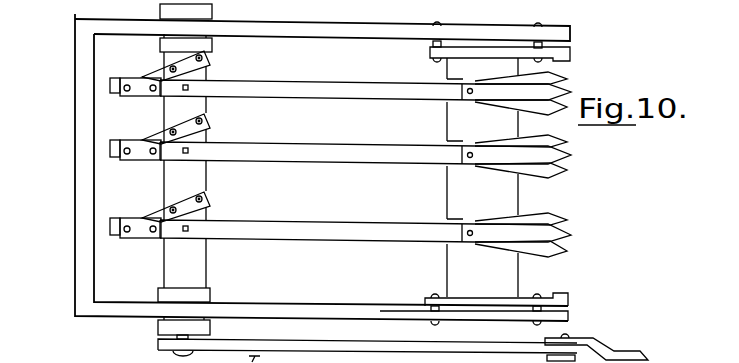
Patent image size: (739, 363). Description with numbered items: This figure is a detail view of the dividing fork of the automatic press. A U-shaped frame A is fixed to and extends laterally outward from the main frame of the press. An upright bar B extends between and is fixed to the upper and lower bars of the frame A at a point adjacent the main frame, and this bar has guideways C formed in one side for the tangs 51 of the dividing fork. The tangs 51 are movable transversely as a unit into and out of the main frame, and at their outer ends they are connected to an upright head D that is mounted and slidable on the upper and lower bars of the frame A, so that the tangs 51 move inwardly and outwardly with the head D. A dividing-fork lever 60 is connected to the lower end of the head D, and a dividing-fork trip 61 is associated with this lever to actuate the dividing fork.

The U-shaped frame A is at (322, 33).
The upright bar B is at (80, 168).
The guideways C is at (470, 143).
The upright head D is at (198, 135).
The tangs of dividing fork 51 is at (349, 97).
The dividing-fork lever 60 is at (364, 348).
The dividing-fork trip 61 is at (631, 356).